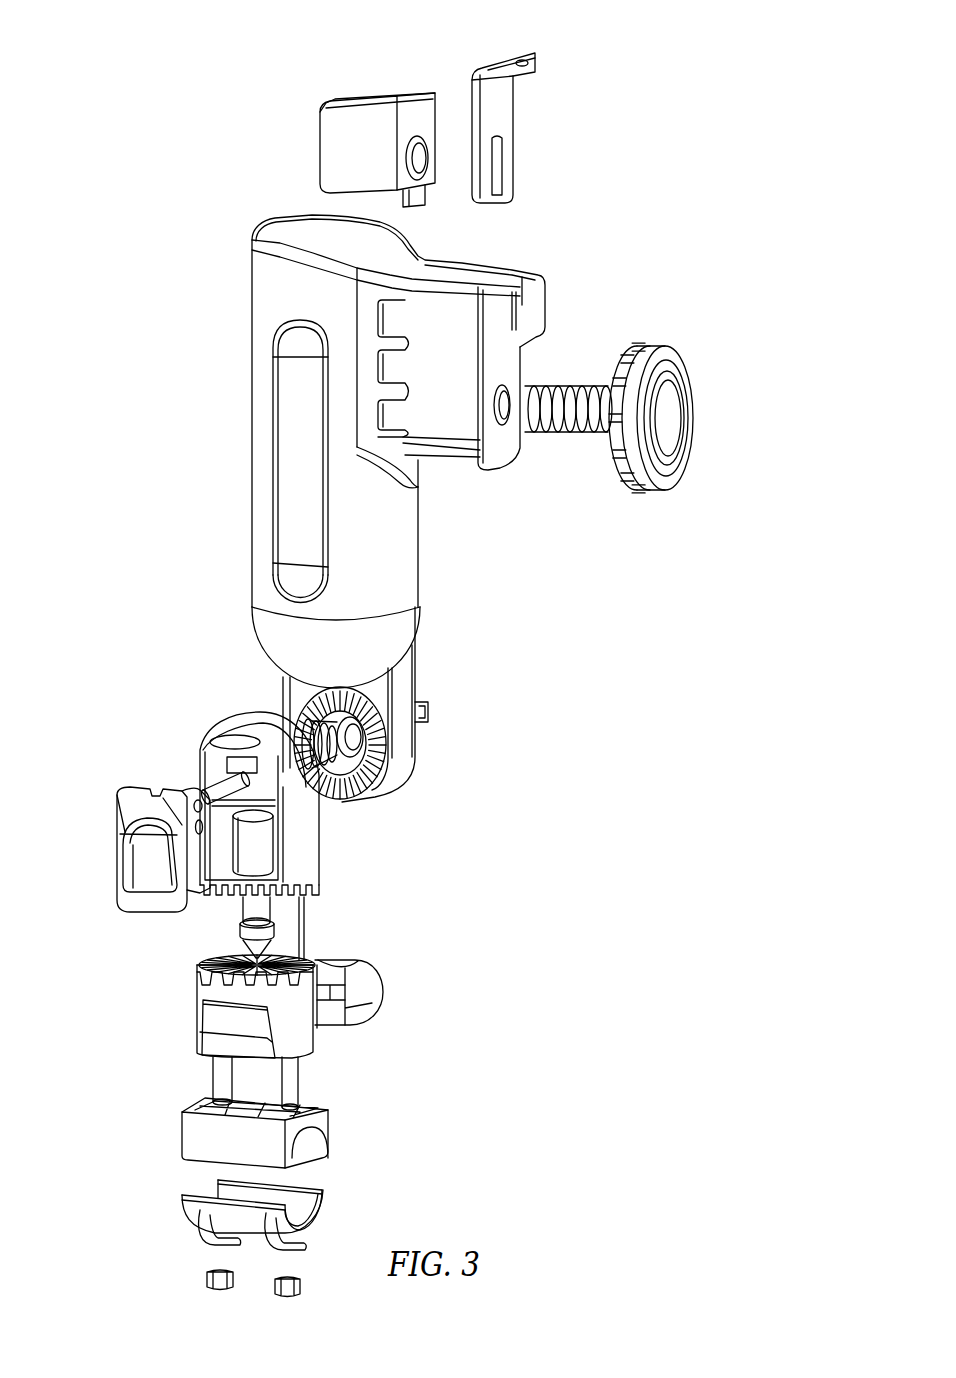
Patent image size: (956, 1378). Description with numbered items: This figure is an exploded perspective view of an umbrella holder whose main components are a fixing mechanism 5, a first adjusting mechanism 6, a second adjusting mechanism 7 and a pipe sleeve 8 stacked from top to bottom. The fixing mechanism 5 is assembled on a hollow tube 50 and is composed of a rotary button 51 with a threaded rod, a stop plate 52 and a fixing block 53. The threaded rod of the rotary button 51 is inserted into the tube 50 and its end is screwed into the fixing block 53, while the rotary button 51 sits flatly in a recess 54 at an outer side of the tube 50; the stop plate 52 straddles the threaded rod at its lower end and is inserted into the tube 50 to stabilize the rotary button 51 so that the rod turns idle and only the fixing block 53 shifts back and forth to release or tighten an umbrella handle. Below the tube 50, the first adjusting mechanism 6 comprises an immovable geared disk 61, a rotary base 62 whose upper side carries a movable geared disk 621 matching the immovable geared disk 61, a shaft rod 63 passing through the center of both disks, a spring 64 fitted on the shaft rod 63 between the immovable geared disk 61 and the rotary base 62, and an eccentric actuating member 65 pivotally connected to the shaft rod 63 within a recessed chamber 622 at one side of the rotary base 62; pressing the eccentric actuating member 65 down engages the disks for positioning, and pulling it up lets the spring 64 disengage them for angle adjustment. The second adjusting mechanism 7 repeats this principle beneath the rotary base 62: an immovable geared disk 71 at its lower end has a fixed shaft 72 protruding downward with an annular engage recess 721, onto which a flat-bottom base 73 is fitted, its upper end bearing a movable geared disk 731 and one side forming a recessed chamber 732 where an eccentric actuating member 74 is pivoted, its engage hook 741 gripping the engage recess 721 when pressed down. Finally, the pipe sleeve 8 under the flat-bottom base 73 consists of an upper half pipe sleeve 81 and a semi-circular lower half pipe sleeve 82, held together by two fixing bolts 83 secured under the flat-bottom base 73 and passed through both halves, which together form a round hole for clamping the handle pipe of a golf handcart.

The fixing mechanism 5 is at (572, 260).
The hollow tube 50 is at (265, 303).
The rotary button 51 is at (660, 348).
The stop plate 52 is at (503, 113).
The fixing block 53 is at (378, 102).
The recess 54 is at (505, 443).
The first adjusting mechanism 6 is at (183, 710).
The immovable geared disk 61 is at (373, 747).
The rotary base 62 is at (307, 813).
The movable geared disk 621 is at (270, 707).
The recessed chamber 622 is at (257, 853).
The shaft rod 63 is at (213, 790).
The spring 64 is at (378, 793).
The eccentric actuating member 65 is at (127, 810).
The second adjusting mechanism 7 is at (168, 992).
The immovable geared disk 71 is at (307, 909).
The fixed shaft 72 is at (267, 912).
The annular engage recess 721 is at (253, 932).
The flat-bottom base 73 is at (297, 1043).
The movable geared disk 731 is at (213, 957).
The recessed chamber 732 is at (317, 1028).
The eccentric actuating member 74 is at (365, 985).
The engage hook 741 is at (317, 995).
The pipe sleeve 8 is at (360, 1170).
The upper half pipe sleeve 81 is at (320, 1122).
The lower half pipe sleeve 82 is at (327, 1215).
The fixing bolts 83 is at (290, 1087).